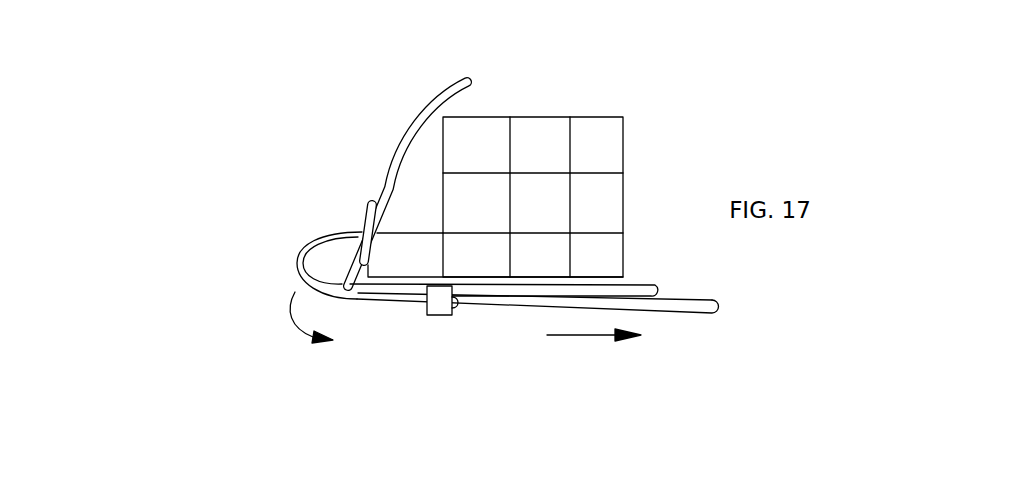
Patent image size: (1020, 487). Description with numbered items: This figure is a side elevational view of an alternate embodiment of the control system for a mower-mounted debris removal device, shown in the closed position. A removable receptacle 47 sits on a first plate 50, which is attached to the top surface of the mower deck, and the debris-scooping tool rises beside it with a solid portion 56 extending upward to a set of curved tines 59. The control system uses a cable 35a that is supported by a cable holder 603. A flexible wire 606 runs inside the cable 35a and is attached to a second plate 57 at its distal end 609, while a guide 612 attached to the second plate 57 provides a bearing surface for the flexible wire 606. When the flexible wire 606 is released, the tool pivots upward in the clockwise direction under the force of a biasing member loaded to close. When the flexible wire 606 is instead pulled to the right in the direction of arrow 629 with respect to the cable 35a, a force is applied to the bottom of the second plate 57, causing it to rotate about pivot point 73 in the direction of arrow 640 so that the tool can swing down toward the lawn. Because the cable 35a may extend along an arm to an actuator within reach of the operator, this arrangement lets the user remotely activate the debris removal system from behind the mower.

The cable 35a is at (668, 315).
The removable receptacle 47 is at (602, 142).
The first plate 50 is at (490, 283).
The solid portion 56 is at (387, 160).
The second plate 57 is at (365, 222).
The curved tines 59 is at (444, 96).
The pivot point 73 is at (332, 292).
The cable holder 603 is at (438, 300).
The flexible wire 606 is at (399, 303).
The distal end 609 is at (358, 228).
The guide 612 is at (317, 258).
The arrow 629 is at (597, 337).
The arrow 640 is at (298, 325).